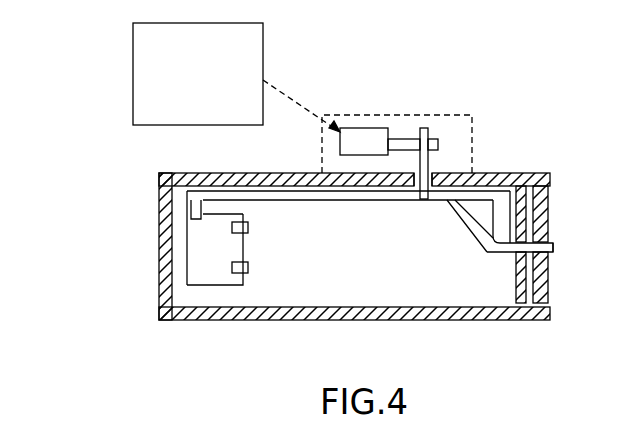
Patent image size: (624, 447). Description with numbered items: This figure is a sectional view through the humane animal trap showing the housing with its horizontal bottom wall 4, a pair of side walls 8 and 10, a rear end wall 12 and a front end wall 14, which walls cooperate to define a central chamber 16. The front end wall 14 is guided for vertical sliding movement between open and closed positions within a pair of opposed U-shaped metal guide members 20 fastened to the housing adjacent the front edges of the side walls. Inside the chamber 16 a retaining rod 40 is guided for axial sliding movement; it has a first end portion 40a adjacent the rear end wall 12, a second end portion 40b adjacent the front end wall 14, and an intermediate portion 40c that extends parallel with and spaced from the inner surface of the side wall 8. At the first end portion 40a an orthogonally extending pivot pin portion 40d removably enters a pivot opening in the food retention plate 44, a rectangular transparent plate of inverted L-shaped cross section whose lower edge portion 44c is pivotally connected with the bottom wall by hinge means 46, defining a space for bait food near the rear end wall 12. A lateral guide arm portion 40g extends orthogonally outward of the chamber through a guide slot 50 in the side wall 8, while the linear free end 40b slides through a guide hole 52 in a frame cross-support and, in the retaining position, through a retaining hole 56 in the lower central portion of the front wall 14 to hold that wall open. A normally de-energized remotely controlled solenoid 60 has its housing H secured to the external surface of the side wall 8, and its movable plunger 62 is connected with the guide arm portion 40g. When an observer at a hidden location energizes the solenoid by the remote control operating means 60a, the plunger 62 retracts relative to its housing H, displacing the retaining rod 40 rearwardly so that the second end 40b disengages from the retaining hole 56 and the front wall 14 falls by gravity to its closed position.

The bottom wall 4 is at (354, 333).
The side wall 8 is at (499, 170).
The side wall 10 is at (450, 313).
The rear end wall 12 is at (355, 242).
The front end wall 14 is at (548, 281).
The central chamber 16 is at (357, 257).
The U-shaped metal guide members 20 is at (559, 235).
The retaining rod 40 is at (365, 177).
The first end portion 40a is at (187, 173).
The second end portion 40b is at (553, 247).
The intermediate portion 40c is at (381, 201).
The pivot pin portion 40d is at (187, 206).
The lateral guide arm portion 40g is at (430, 163).
The food retention plate 44 is at (248, 249).
The cup top 44c is at (203, 213).
The hinge means 46 is at (249, 228).
The guide slot 50 is at (420, 121).
The guide hole 52 is at (495, 238).
The retaining hole 56 is at (540, 247).
The remotely controlled solenoid 60 is at (350, 128).
The remote control operating means 60a is at (132, 82).
The plunger 62 is at (433, 140).
The housing H is at (408, 115).